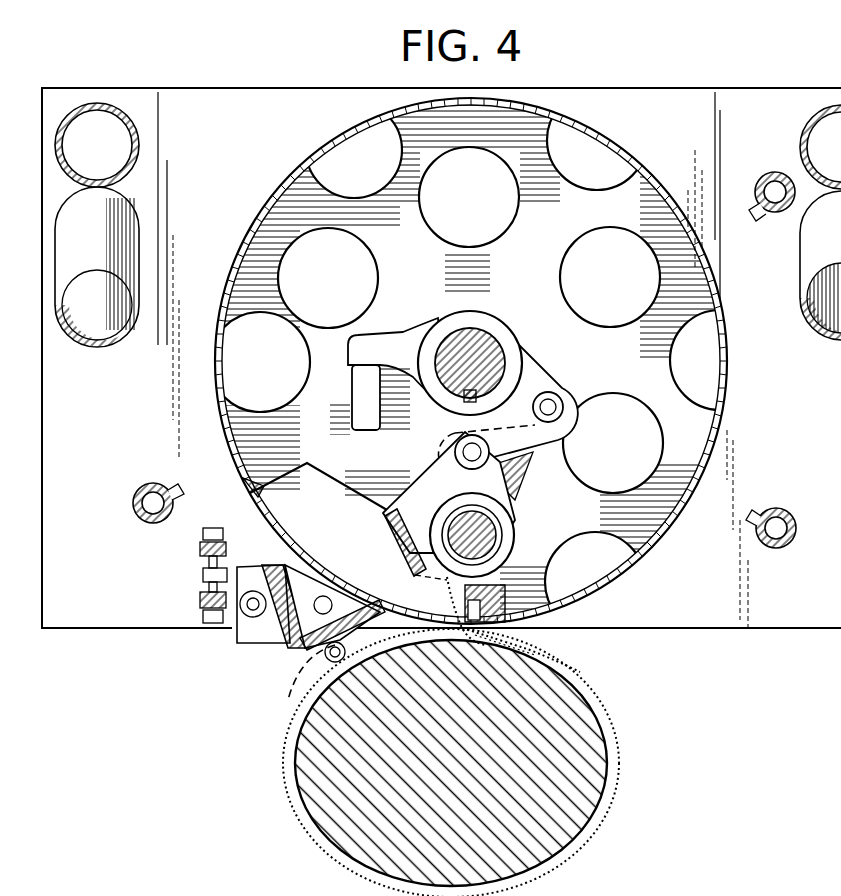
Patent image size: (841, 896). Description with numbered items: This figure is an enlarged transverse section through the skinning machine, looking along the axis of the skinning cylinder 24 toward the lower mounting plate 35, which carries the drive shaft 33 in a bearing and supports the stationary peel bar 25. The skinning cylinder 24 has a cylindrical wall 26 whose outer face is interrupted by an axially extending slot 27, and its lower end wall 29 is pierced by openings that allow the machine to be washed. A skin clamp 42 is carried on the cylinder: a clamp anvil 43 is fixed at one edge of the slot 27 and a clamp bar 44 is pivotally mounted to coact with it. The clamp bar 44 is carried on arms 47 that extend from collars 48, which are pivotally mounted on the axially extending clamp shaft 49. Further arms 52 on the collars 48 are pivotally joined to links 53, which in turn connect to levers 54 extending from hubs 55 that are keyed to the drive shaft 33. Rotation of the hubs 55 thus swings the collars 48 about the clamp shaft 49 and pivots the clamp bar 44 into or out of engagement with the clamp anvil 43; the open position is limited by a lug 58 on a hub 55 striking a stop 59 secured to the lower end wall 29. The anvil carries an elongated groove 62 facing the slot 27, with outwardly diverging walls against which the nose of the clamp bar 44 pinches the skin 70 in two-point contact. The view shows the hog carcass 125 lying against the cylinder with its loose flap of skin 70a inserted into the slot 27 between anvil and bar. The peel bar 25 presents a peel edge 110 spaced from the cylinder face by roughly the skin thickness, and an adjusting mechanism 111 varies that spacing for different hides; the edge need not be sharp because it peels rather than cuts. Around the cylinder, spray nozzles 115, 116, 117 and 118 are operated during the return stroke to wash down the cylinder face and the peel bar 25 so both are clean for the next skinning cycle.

The skinning cylinder 24 is at (490, 361).
The peel bar 25 is at (300, 646).
The cylindrical wall 26 is at (648, 172).
The axially extending slot 27 is at (300, 515).
The lower end wall 29 is at (648, 520).
The drive shaft 33 is at (462, 330).
The lower mounting plate 35 is at (125, 628).
The skin clamp 42 is at (513, 529).
The clamp anvil 43 is at (490, 588).
The clamp bar 44 is at (390, 549).
The arm 47 is at (383, 514).
The collar 48 is at (500, 515).
The clamp shaft 49 is at (430, 512).
The arm 52 is at (458, 451).
The link 53 is at (563, 410).
The lever 54 is at (542, 382).
The hub 55 is at (495, 313).
The lug 58 is at (385, 335).
The stop 59 is at (352, 398).
The elongated groove 62 is at (555, 648).
The skin 70 is at (614, 698).
The loose flap of skin 70a is at (445, 587).
The peel edge 110 is at (378, 612).
The adjusting mechanism 111 is at (203, 562).
The spray nozzle 115 is at (152, 484).
The spray nozzle 116 is at (757, 185).
The spray nozzle 117 is at (774, 510).
The spray nozzle 118 is at (330, 662).
The hog carcass 125 is at (578, 780).